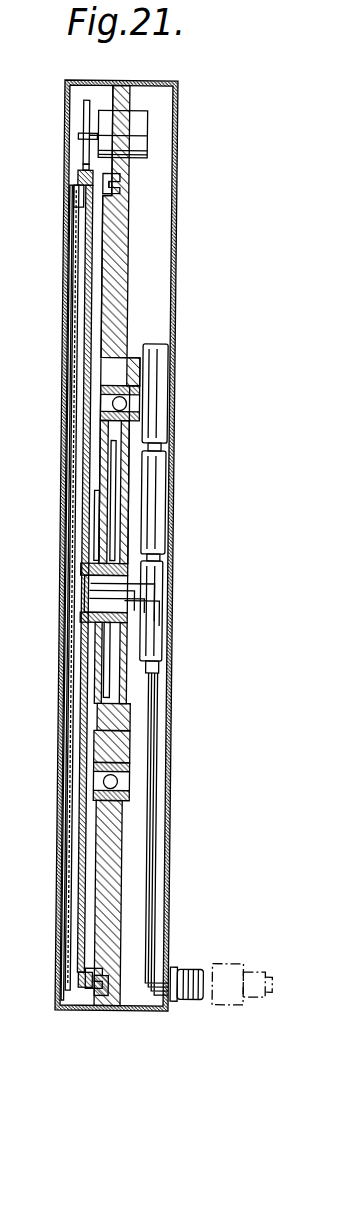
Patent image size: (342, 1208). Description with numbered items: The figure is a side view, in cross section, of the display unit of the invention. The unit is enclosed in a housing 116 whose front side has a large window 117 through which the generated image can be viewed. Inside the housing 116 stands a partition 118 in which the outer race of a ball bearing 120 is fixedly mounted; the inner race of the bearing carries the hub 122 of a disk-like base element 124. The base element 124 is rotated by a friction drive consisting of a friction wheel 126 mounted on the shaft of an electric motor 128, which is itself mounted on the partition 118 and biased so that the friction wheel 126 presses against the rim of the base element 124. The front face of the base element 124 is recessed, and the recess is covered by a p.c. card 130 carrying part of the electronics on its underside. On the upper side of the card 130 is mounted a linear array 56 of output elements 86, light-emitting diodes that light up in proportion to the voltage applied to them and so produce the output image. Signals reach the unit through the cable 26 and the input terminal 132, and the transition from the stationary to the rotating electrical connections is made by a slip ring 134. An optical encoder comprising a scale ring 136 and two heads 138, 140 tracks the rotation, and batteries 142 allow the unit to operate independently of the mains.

The cable 26 is at (281, 989).
The array of output elements 56 is at (34, 498).
The output elements 86 is at (76, 518).
The housing 116 is at (66, 103).
The window 117 is at (69, 195).
The partition 118 is at (120, 225).
The ball bearing 120 is at (131, 387).
The hub 122 is at (135, 766).
The base element 124 is at (99, 978).
The friction wheel 126 is at (89, 153).
The electric motor 128 is at (141, 121).
The p.c. card 130 is at (87, 915).
The input terminal 132 is at (200, 966).
The slip ring 134 is at (125, 477).
The scale ring 136 is at (100, 985).
The head 138 is at (120, 985).
The head 140 is at (122, 172).
The batteries 142 is at (158, 375).